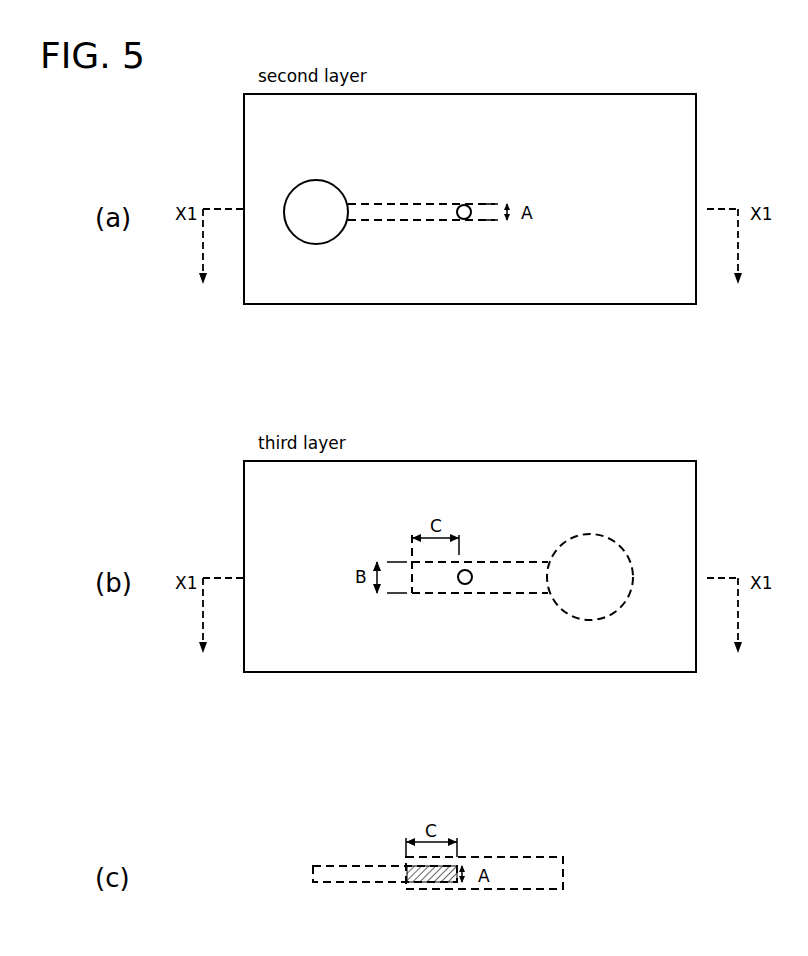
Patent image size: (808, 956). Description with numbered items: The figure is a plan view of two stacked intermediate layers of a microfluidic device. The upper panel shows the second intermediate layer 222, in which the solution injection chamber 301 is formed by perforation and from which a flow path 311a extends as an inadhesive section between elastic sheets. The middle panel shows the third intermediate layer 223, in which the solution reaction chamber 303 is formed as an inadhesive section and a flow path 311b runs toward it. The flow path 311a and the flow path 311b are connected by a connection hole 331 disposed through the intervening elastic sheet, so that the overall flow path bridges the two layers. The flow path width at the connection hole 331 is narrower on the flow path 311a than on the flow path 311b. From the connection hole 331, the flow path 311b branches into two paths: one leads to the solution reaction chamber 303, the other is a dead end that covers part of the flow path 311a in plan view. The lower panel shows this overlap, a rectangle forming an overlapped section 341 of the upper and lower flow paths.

The second intermediate layer 222 is at (624, 80).
The third intermediate layer 223 is at (624, 449).
The solution injection chamber 301 is at (316, 184).
The solution reaction chamber 303 is at (611, 540).
The flow path 311a is at (381, 207).
The flow path 311b is at (490, 594).
The connection hole 331 is at (468, 206).
The overlapped section 341 is at (430, 881).